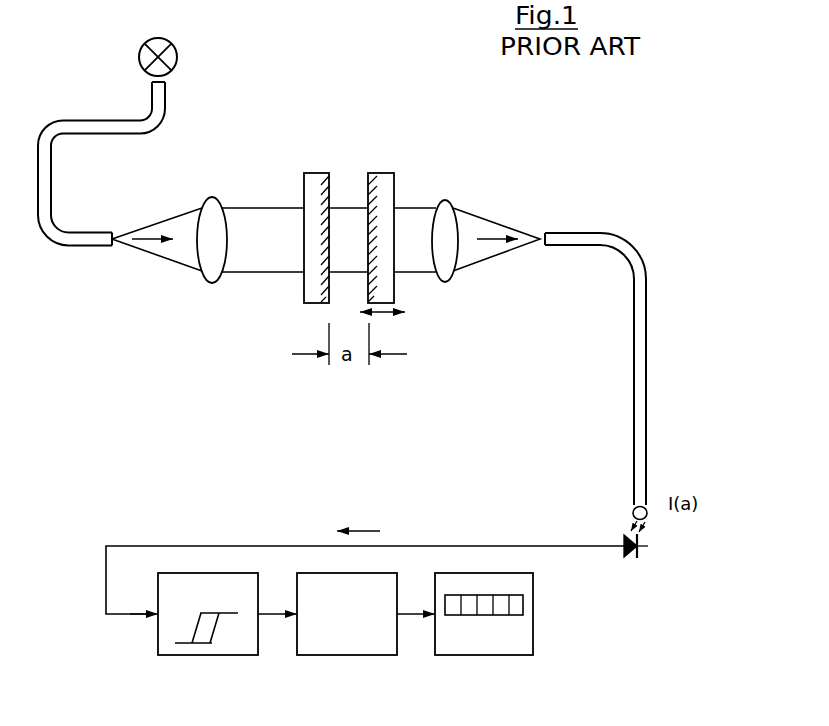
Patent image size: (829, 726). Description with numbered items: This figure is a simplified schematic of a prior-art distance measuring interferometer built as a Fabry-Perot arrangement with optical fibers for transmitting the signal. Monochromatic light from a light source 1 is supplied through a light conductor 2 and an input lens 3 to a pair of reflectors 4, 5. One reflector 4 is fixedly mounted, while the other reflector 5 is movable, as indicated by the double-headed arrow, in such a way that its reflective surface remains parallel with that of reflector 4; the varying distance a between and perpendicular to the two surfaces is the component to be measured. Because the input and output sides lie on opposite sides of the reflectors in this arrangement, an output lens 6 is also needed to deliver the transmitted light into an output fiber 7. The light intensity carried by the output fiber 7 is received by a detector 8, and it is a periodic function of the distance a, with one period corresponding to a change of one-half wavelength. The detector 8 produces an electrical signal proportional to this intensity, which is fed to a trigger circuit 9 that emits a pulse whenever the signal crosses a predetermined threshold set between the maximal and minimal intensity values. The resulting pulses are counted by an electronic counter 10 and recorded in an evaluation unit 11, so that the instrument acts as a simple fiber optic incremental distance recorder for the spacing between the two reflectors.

The light source 1 is at (187, 36).
The light conductor 2 is at (130, 134).
The lens 3 is at (206, 199).
The reflector 4 is at (306, 173).
The reflector 5 is at (371, 173).
The output lens 6 is at (452, 186).
The output fiber 7 is at (647, 313).
The detector 8 is at (627, 557).
The trigger circuit 9 is at (237, 656).
The electronic counter 10 is at (382, 656).
The evaluation unit 11 is at (518, 656).